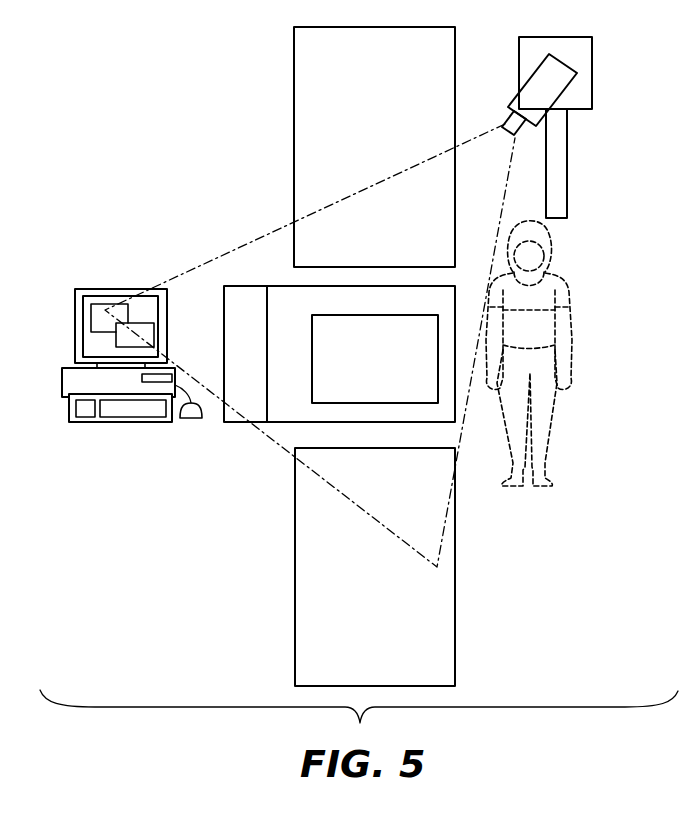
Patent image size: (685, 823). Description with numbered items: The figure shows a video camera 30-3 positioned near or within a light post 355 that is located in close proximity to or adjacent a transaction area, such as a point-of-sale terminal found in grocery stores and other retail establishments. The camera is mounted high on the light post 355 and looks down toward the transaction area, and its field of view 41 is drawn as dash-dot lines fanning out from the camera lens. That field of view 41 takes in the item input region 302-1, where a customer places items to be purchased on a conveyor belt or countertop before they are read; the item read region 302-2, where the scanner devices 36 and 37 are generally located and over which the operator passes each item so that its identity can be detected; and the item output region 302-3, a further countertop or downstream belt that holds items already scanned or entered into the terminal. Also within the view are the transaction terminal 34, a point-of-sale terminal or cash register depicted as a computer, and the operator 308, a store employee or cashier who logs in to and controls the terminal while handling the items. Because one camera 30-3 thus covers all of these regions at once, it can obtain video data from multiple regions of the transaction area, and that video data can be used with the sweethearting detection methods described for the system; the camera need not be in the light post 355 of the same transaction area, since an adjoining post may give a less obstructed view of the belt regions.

The item input region 302-1 is at (446, 56).
The item read region 302-2 is at (444, 311).
The item output region 302-3 is at (448, 648).
The scanner device 36 is at (431, 396).
The scanner device 37 is at (259, 317).
The video camera 30-3 is at (572, 74).
The light post 355 is at (567, 169).
The operator 308 is at (548, 337).
The transaction terminal 34 is at (110, 287).
The field of view 41 is at (277, 445).